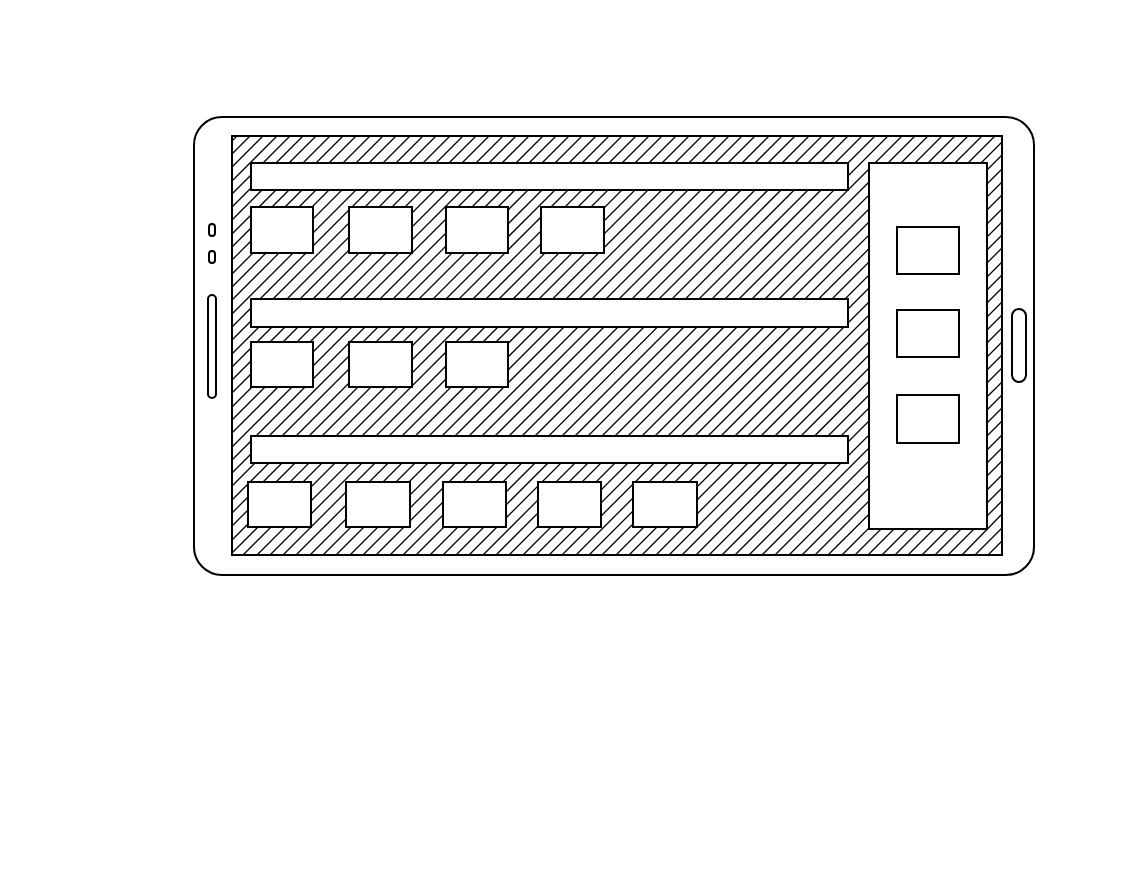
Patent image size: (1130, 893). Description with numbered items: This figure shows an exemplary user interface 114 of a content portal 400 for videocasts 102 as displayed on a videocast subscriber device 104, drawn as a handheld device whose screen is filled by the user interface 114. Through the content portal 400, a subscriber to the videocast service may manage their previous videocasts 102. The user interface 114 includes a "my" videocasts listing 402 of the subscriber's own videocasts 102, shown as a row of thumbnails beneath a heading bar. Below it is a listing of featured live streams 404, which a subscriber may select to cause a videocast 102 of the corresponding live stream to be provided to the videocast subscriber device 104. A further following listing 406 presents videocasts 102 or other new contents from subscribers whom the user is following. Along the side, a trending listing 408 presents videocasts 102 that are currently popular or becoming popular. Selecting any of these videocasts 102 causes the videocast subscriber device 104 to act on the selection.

The content portal 400 is at (109, 73).
The videocast subscriber device 104 is at (447, 117).
The user interface 114 is at (624, 136).
The "my" videocasts listing 402 is at (251, 177).
The featured live streams listing 404 is at (251, 312).
The following listing 406 is at (251, 449).
The trending videocasts listing 408 is at (987, 196).
The videocast 102 is at (603, 367).